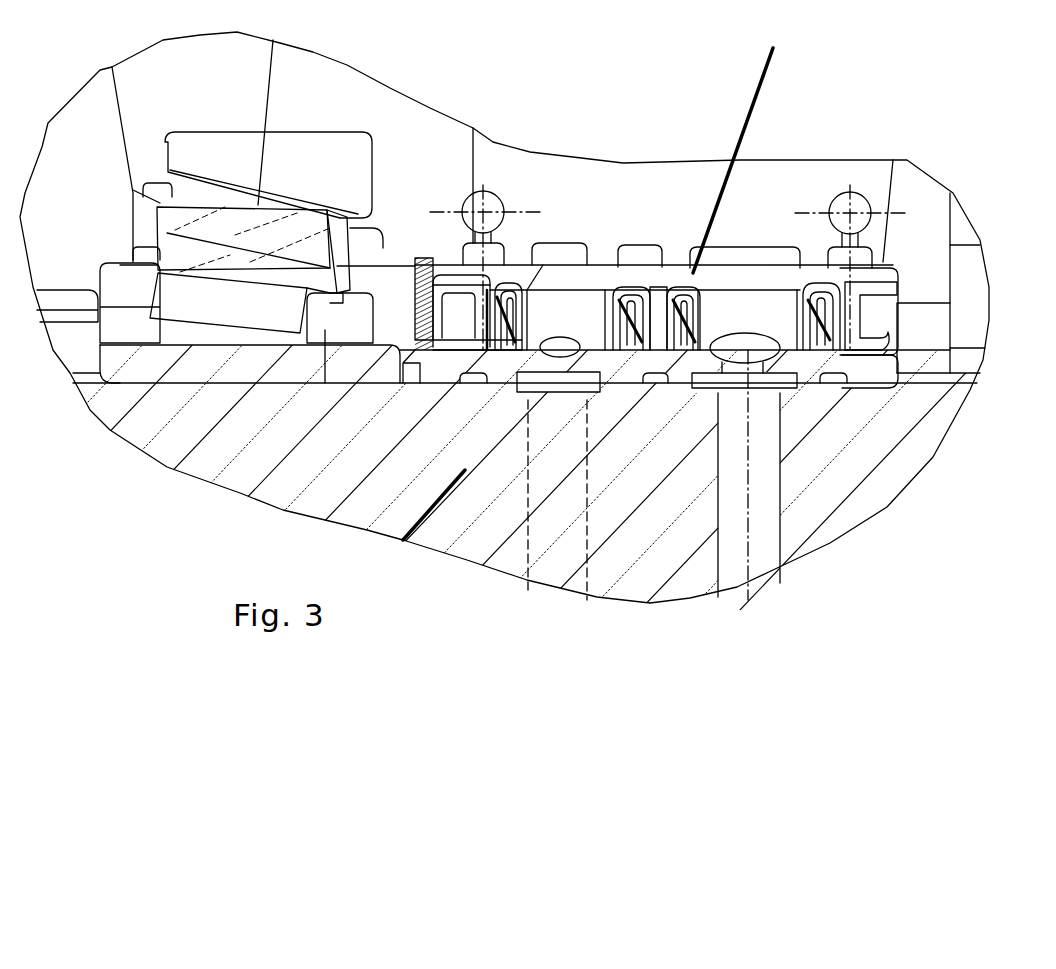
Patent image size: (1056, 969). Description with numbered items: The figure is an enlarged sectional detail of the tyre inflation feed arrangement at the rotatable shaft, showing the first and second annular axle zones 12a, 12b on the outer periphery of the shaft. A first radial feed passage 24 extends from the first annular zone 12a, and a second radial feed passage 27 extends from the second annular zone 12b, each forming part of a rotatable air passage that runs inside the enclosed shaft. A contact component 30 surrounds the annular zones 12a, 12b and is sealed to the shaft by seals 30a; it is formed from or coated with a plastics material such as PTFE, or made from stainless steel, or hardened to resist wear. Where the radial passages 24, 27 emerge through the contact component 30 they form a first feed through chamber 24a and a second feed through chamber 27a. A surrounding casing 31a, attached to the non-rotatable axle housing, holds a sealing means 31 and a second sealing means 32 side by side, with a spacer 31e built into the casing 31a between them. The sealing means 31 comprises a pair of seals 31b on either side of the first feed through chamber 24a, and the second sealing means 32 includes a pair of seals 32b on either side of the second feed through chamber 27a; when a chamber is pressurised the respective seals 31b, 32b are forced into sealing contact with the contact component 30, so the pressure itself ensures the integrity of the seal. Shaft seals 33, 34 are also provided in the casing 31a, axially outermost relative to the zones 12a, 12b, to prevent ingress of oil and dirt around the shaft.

The first annular axle zone 12a is at (780, 400).
The second annular axle zone 12b is at (525, 392).
The first radial feed passage 24 is at (757, 550).
The first feed through chamber 24a is at (747, 331).
The second radial feed passage 27 is at (560, 553).
The second feed through chamber 27a is at (566, 311).
The contact component 30 is at (440, 372).
The seals 30a is at (467, 387).
The sealing means 31 is at (805, 280).
The casing 31a is at (747, 143).
The seals 31b is at (718, 325).
The spacer 31e is at (658, 290).
The second sealing means 32 is at (613, 327).
The seals 32b is at (597, 327).
The shaft seal 33 is at (880, 293).
The shaft seal 34 is at (442, 340).